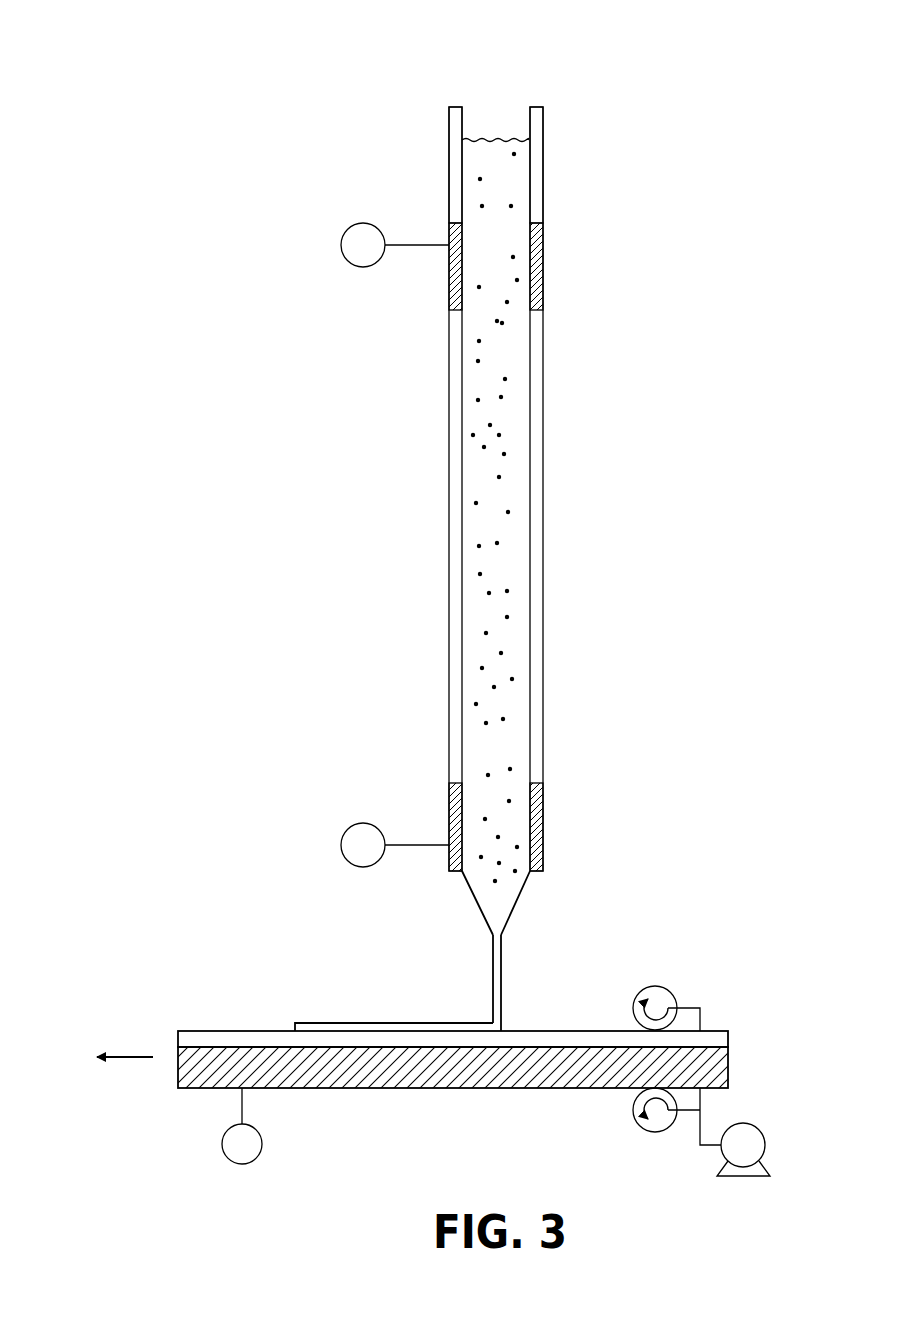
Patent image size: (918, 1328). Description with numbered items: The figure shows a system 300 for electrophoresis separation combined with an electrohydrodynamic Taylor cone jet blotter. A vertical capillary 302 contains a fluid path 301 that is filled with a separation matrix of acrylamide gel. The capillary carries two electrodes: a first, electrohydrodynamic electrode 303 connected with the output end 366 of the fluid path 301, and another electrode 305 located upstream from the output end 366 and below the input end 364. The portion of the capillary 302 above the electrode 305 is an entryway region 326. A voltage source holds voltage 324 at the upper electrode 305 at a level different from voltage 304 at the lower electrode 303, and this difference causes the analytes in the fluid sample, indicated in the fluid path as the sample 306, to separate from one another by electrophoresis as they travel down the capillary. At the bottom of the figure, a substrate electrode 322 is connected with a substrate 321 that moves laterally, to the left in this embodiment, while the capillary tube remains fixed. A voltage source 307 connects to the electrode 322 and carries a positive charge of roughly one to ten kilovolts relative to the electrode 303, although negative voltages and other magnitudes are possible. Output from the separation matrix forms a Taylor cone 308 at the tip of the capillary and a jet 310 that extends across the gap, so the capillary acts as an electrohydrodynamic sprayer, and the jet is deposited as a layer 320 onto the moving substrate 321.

The system 300 is at (324, 55).
The input end 364 is at (495, 118).
The entryway region 326 is at (449, 160).
The voltage 324 is at (341, 242).
The electrode 305 is at (449, 273).
The capillary 302 is at (449, 485).
The fluid path 301 is at (513, 513).
The fluid / suspension 306 is at (514, 563).
The electrohydrodynamic electrode 303 is at (449, 828).
The voltage 304 is at (341, 845).
The output end 366 is at (505, 880).
The Taylor cone 308 is at (520, 905).
The jet 310 is at (502, 985).
The substrate 321 is at (198, 1031).
The deposited film 320 is at (345, 1023).
The substrate electrode 322 is at (198, 1088).
The voltage source 307 is at (262, 1144).